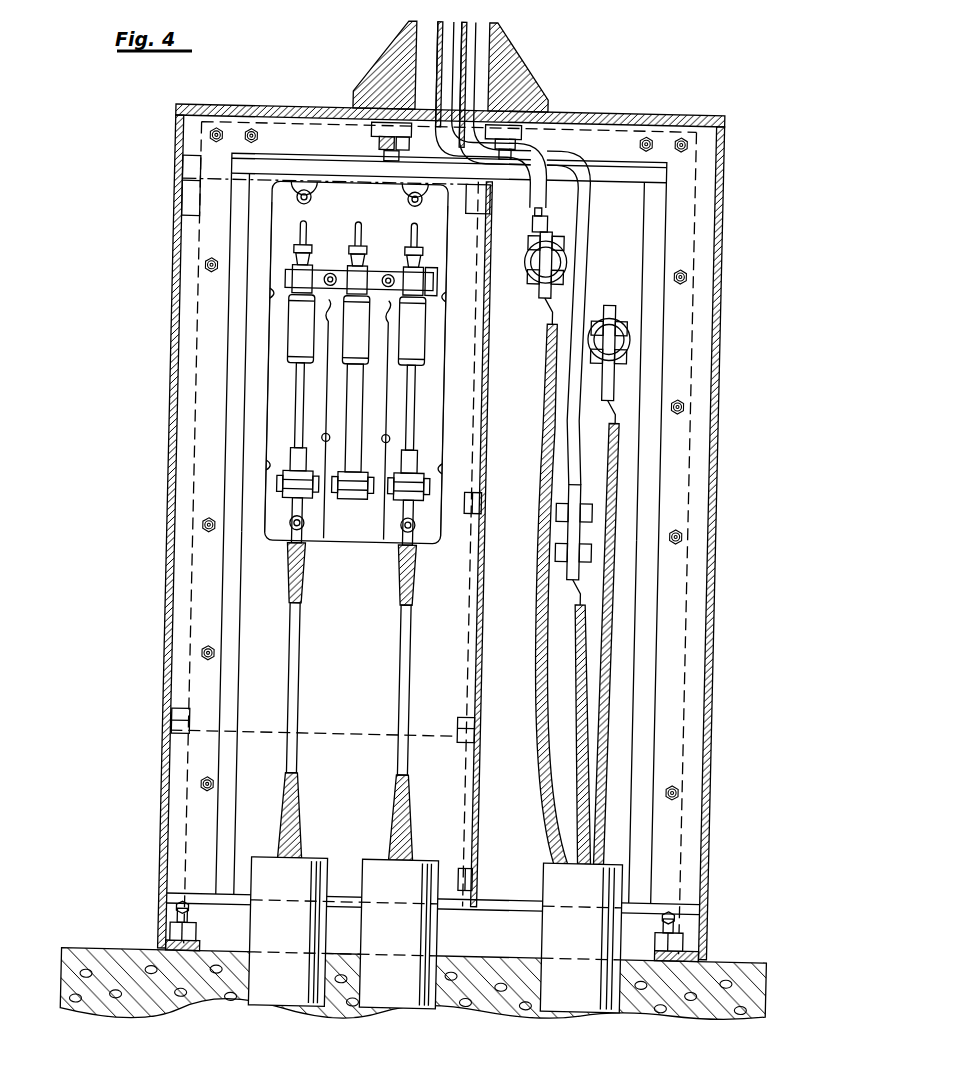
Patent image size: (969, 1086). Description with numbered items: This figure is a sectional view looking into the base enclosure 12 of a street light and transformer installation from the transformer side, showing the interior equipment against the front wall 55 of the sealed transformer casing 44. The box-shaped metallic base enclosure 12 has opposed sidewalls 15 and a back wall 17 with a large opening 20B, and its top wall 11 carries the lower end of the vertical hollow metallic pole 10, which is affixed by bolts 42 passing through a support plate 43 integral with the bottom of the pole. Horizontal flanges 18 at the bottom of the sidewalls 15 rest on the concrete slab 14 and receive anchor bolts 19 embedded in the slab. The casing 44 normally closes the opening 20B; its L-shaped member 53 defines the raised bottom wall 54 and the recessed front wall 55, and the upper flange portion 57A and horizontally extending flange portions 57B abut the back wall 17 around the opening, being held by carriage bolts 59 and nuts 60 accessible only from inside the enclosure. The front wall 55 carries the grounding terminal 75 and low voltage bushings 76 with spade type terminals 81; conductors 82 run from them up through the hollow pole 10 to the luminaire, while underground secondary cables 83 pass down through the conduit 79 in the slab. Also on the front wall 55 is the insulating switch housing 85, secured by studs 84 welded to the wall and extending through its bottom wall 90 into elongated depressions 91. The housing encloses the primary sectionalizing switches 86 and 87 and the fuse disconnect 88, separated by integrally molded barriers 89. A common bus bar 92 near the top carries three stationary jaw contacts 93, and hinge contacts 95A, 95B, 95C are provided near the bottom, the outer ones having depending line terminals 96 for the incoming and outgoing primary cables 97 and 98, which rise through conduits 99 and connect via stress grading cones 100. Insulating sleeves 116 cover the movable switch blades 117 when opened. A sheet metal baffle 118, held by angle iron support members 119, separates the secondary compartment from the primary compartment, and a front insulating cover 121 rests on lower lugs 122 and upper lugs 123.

The vertical hollow metallic pole 10 is at (406, 22).
The top wall 11 is at (264, 104).
The base enclosure 12 is at (408, 506).
The concrete slab 14 is at (102, 977).
The sidewalls 15 is at (175, 584).
The back wall 17 is at (553, 130).
The horizontal flanges 18 is at (177, 942).
The anchor bolts 19 is at (188, 918).
The opening in back wall 20B is at (606, 163).
The bolts 42 is at (385, 150).
The support plate 43 is at (372, 96).
The sealed transformer casing 44 is at (188, 368).
The L-shaped member 53 is at (511, 914).
The bottom wall 54 is at (462, 905).
The front wall of casing 55 is at (361, 676).
The upper vertically extending flange portion 57A is at (288, 160).
The horizontally extending flange portions 57B is at (650, 370).
The carriage bolts 59 is at (251, 130).
The nuts 60 is at (210, 134).
The grounding terminal 75 is at (570, 580).
The low voltage bushings 76 is at (530, 266).
The conduit 79 is at (590, 938).
The spade type terminals 81 is at (545, 296).
The conductors 82 is at (465, 56).
The underground secondary cables 83 is at (605, 722).
The studs 84 is at (303, 190).
The insulating switch housing 85 is at (260, 473).
The primary sectionalizing switch 86 is at (298, 397).
The primary sectionalizing switch 87 is at (411, 411).
The fuse disconnect 88 is at (357, 383).
The barriers 89 is at (330, 330).
The bottom wall of switch housing 90 is at (349, 213).
The elongated depressions 91 is at (285, 191).
The common metallic bus bar 92 is at (428, 268).
The stationary jaw contacts 93 is at (347, 270).
The outer hinge contact 95A is at (283, 490).
The hinge contact 95B is at (332, 497).
The outer hinge contact 95C is at (423, 493).
The line terminals 96 is at (298, 527).
The primary underground cable 97 is at (295, 657).
The primary underground cable 98 is at (405, 672).
The conduits 99 is at (294, 936).
The stress grading cones 100 is at (393, 823).
The insulating sleeves 116 is at (298, 337).
The movable switch blade 117 is at (297, 275).
The sheet metal baffle 118 is at (488, 388).
The angle iron support members 119 is at (470, 500).
The front insulating cover 121 is at (236, 180).
The lower lugs 122 is at (182, 735).
The upper lugs 123 is at (183, 170).